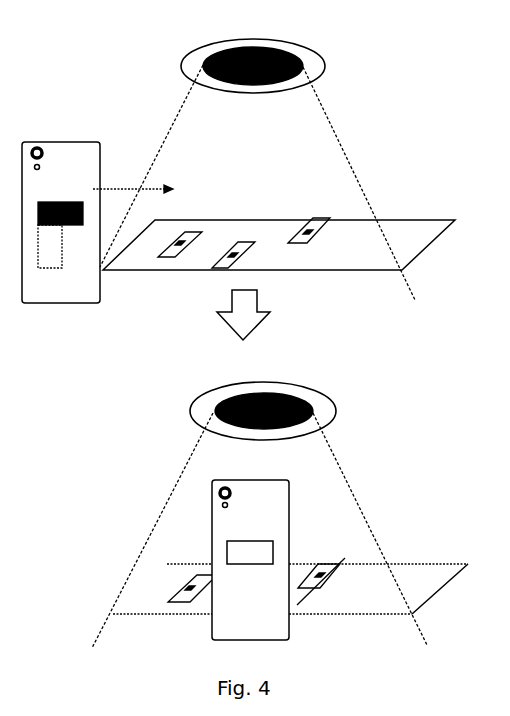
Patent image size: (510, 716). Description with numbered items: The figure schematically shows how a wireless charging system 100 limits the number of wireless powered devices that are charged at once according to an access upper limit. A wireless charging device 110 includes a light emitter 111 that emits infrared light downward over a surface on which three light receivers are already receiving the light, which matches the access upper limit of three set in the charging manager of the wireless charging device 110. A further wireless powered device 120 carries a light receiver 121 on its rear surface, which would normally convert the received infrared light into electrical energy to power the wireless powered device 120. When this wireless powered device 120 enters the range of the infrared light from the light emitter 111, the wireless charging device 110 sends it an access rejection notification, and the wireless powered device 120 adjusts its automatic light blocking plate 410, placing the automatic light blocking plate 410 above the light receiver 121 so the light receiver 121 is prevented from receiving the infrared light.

The wireless charging system 100 is at (133, 84).
The wireless charging device 110 is at (325, 63).
The light emitter 111 is at (267, 44).
The wireless powered device 120 is at (84, 142).
The light receiver 121 is at (52, 203).
The automatic light blocking plate 410 is at (52, 262).